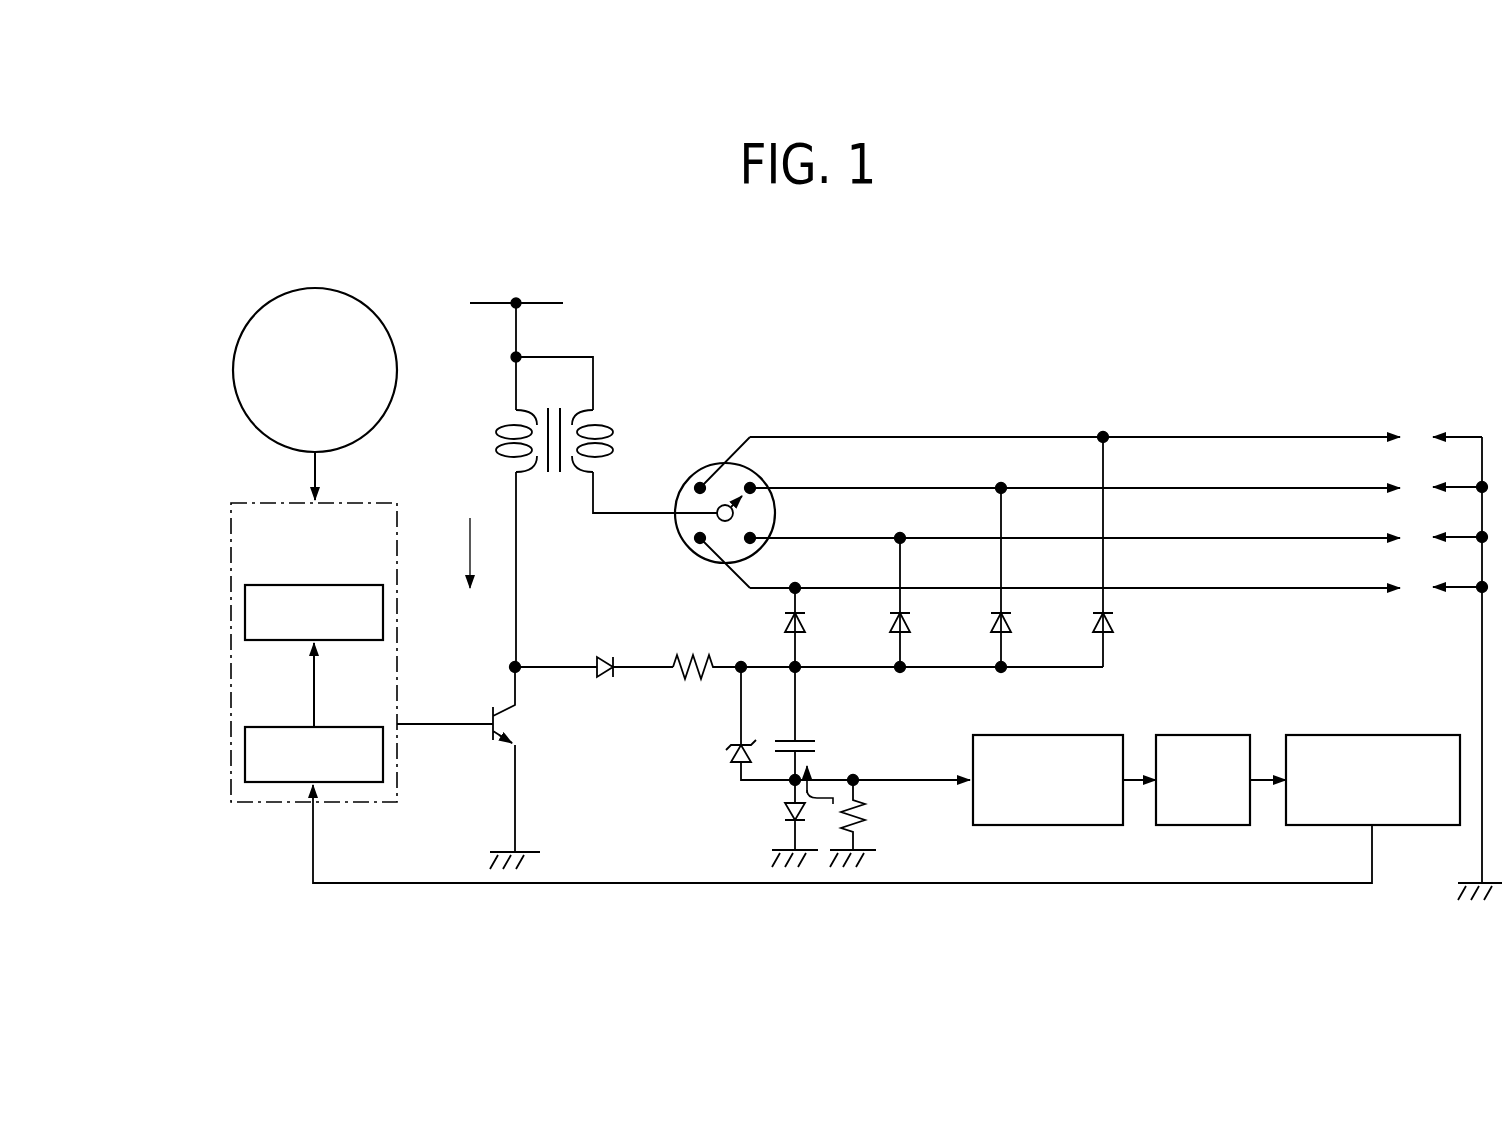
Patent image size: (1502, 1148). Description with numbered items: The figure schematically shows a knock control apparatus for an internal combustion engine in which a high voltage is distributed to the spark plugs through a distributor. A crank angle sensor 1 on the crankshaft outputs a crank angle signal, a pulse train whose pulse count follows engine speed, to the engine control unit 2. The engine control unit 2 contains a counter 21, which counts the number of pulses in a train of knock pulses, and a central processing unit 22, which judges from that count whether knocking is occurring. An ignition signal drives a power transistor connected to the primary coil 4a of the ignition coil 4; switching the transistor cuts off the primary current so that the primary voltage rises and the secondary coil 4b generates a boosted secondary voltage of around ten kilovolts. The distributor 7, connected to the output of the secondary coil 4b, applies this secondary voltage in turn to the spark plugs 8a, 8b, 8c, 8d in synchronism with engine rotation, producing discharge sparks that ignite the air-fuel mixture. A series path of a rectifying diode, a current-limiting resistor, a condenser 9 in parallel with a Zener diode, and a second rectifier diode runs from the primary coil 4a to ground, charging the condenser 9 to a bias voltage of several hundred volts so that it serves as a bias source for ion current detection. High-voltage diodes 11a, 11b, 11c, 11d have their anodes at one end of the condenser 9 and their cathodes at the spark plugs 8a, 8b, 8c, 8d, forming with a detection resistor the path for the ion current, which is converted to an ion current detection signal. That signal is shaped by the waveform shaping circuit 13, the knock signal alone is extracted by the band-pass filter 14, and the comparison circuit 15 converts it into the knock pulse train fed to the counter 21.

The crank angle sensor 1 is at (240, 337).
The engine control unit 2 is at (231, 523).
The counter 21 is at (245, 751).
The central processing unit 22 is at (245, 606).
The ignition coil 4 is at (562, 384).
The primary coil 4a is at (516, 410).
The secondary coil 4b is at (613, 437).
The distributor 7 is at (703, 465).
The spark plug 8a is at (1411, 582).
The spark plug 8b is at (1411, 532).
The spark plug 8c is at (1411, 482).
The spark plug 8d is at (1411, 432).
The condenser 9 is at (818, 743).
The high-voltage diode 11a is at (784, 624).
The high-voltage diode 11b is at (889, 622).
The high-voltage diode 11c is at (990, 622).
The high-voltage diode 11d is at (1092, 622).
The waveform shaping circuit 13 is at (1035, 735).
The band-pass filter 14 is at (1212, 735).
The comparison circuit 15 is at (1375, 735).